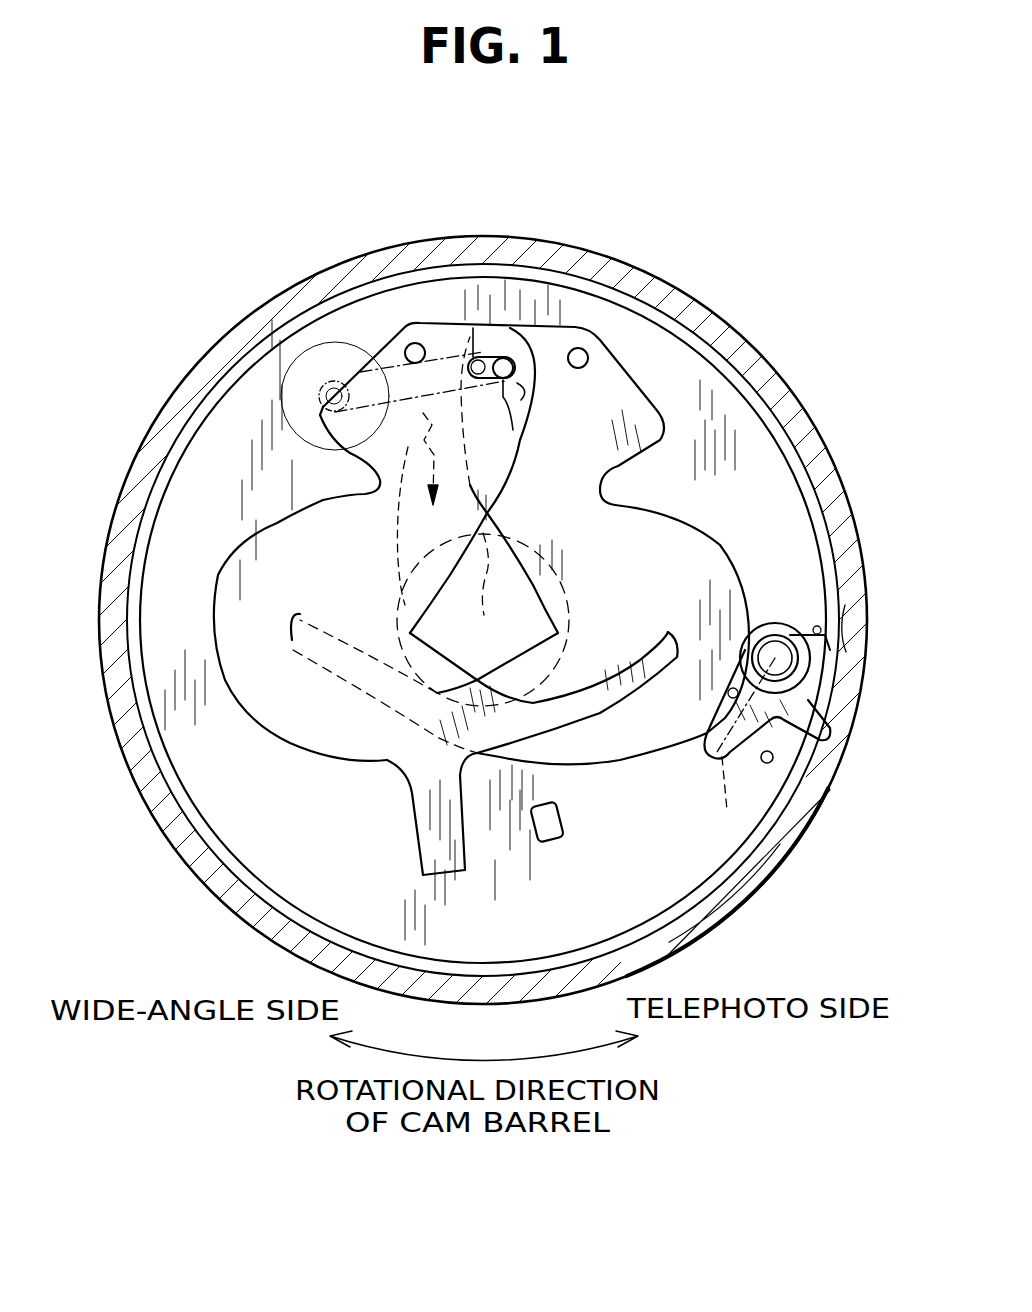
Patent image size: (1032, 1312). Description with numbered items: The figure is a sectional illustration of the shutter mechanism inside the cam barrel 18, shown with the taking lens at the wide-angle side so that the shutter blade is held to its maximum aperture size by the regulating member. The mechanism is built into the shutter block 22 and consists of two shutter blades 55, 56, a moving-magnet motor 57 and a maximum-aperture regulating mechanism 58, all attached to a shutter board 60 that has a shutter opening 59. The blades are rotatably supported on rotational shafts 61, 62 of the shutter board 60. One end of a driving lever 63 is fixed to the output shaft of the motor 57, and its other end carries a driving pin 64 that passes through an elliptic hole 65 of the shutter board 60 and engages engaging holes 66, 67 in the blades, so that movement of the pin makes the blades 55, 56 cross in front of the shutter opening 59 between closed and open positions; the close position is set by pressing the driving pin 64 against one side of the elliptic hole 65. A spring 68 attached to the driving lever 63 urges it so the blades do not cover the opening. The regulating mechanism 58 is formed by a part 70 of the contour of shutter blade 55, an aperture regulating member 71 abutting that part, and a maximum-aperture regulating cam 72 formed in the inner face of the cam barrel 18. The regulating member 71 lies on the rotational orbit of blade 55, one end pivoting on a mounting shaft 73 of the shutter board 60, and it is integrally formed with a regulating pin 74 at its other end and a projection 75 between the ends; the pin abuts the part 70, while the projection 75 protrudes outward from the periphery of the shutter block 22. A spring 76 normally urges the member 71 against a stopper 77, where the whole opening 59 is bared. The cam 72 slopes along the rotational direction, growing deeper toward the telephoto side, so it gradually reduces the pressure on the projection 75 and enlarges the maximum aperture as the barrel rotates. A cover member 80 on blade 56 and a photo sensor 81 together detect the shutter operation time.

The cam barrel 18 is at (742, 343).
The shutter block 22 is at (738, 404).
The shutter blade 55 is at (683, 517).
The shutter blade 56 is at (277, 523).
The motor 57 is at (295, 358).
The maximum-aperture regulating mechanism 58 is at (820, 670).
The shutter opening 59 is at (483, 517).
The shutter board 60 is at (650, 873).
The rotational shaft 61 is at (578, 348).
The rotational shaft 62 is at (415, 343).
The driving lever 63 is at (372, 330).
The driving pin 64 is at (530, 395).
The elliptic hole 65 is at (520, 413).
The engaging hole 66 is at (484, 380).
The engaging hole 67 is at (478, 357).
The spring 68 is at (406, 509).
The part of contour of shutter blade 70 is at (710, 760).
The aperture regulating member 71 is at (707, 717).
The maximum-aperture regulating cam 72 is at (843, 637).
The mounting shaft 73 is at (770, 650).
The regulating pin 74 is at (720, 802).
The projection 75 is at (820, 738).
The spring 76 is at (810, 627).
The stopper 77 is at (773, 756).
The cover member 80 is at (427, 840).
The photo sensor 81 is at (537, 842).